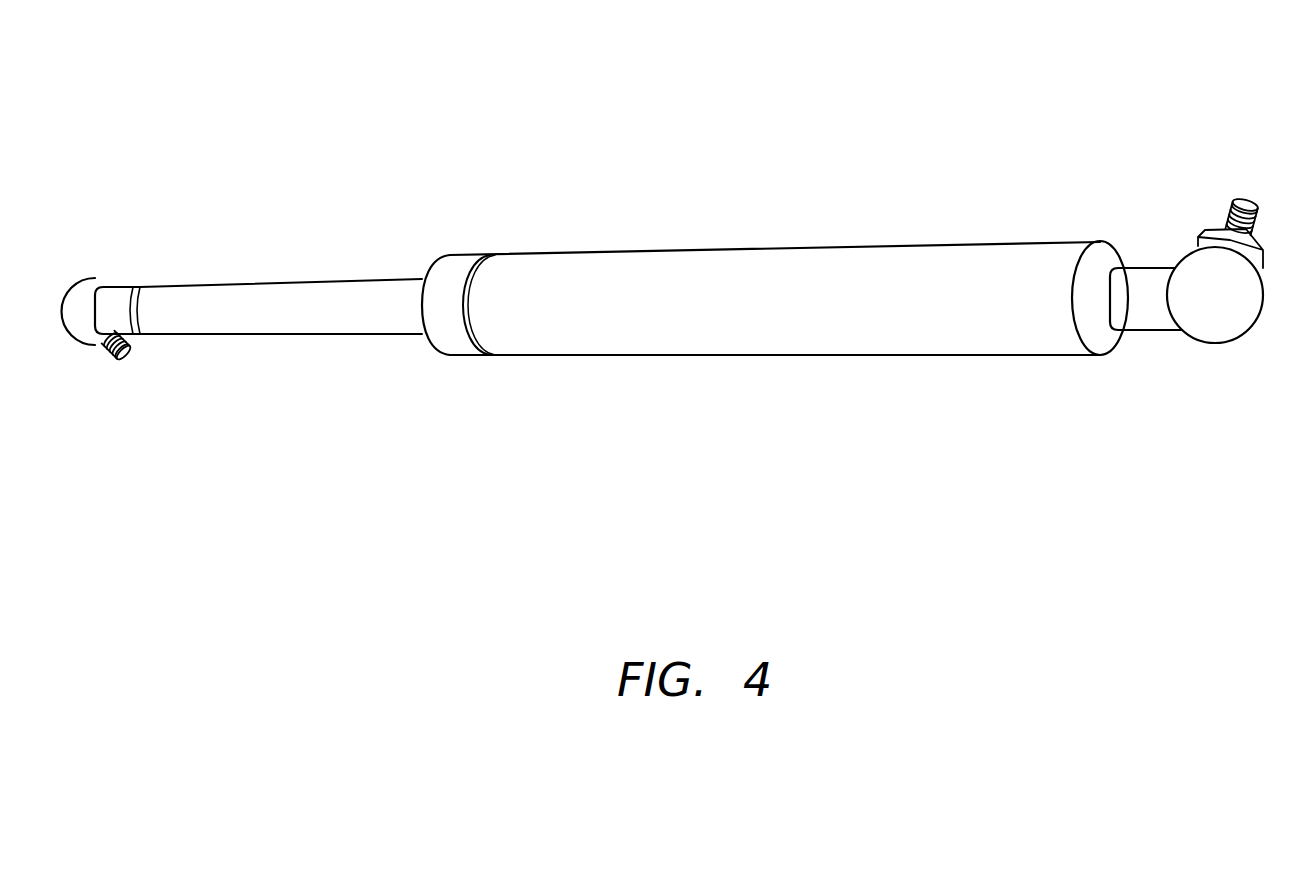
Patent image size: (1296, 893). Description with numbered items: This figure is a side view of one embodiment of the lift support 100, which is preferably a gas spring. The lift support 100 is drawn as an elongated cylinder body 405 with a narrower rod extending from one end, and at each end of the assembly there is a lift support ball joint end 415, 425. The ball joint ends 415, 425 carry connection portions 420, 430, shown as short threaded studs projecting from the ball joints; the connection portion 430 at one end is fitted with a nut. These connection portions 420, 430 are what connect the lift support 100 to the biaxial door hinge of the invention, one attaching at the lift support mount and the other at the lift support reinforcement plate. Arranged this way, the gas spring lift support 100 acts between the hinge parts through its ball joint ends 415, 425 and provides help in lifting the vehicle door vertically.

The lift support 100 is at (697, 208).
The cylinder body 405 is at (800, 355).
The lift support ball joint end 415 is at (93, 278).
The connection portion 420 is at (110, 353).
The lift support ball joint end 425 is at (1215, 345).
The connection portion 430 is at (1222, 215).